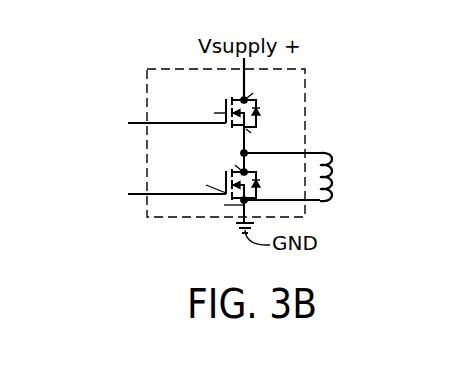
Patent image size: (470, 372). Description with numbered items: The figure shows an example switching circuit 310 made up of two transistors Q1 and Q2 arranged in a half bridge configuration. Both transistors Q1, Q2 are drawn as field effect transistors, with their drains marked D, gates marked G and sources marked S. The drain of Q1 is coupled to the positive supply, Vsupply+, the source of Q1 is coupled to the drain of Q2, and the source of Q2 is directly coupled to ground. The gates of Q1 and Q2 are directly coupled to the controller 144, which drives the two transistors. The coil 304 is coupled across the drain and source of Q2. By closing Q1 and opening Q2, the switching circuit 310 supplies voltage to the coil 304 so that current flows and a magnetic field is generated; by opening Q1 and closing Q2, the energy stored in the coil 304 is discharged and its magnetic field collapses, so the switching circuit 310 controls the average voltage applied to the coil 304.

The switching circuit 310 is at (305, 69).
The coil 304 is at (324, 200).
The controller 144 is at (129, 156).
The transistor Q1 is at (216, 100).
The transistor Q2 is at (220, 172).